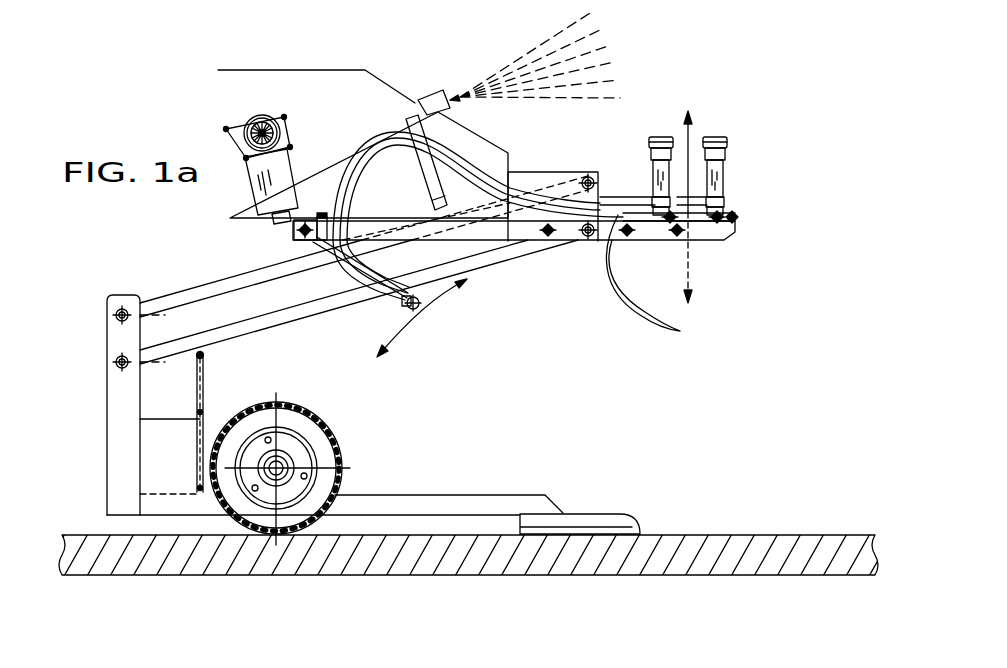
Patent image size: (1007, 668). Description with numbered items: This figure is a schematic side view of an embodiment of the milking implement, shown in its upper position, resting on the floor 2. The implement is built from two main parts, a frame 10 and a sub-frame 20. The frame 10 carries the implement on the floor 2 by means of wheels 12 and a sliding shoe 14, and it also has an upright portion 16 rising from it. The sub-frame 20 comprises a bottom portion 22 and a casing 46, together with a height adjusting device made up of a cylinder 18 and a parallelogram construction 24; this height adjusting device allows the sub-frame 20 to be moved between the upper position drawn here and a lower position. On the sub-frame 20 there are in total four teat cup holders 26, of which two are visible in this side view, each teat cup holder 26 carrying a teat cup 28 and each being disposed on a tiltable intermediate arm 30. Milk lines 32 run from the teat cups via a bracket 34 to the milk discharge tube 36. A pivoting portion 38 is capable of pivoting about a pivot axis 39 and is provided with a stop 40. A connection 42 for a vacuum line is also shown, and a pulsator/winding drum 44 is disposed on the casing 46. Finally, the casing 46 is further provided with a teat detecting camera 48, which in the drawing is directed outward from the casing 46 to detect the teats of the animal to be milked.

The floor 2 is at (413, 553).
The frame 10 is at (420, 505).
The wheels 12 is at (325, 450).
The sliding shoe 14 is at (630, 530).
The upright portion 16 is at (121, 410).
The cylinder 18 is at (203, 410).
The sub-frame 20 is at (207, 109).
The bottom portion 22 is at (497, 228).
The parallelogram construction 24 is at (265, 276).
The teat cup holders 26 is at (722, 215).
The teat cup 28 is at (718, 167).
The tiltable intermediate arm 30 is at (710, 233).
The milk lines 32 is at (662, 281).
The bracket 34 is at (417, 140).
The milk discharge tube 36 is at (413, 303).
The pivoting portion 38 is at (330, 250).
The pivot axis 39 is at (322, 232).
The stop 40 is at (300, 238).
The connection for a vacuum line 42 is at (280, 195).
The pulsator/winding drum 44 is at (243, 118).
The casing 46 is at (303, 85).
The teat detecting camera 48 is at (433, 103).